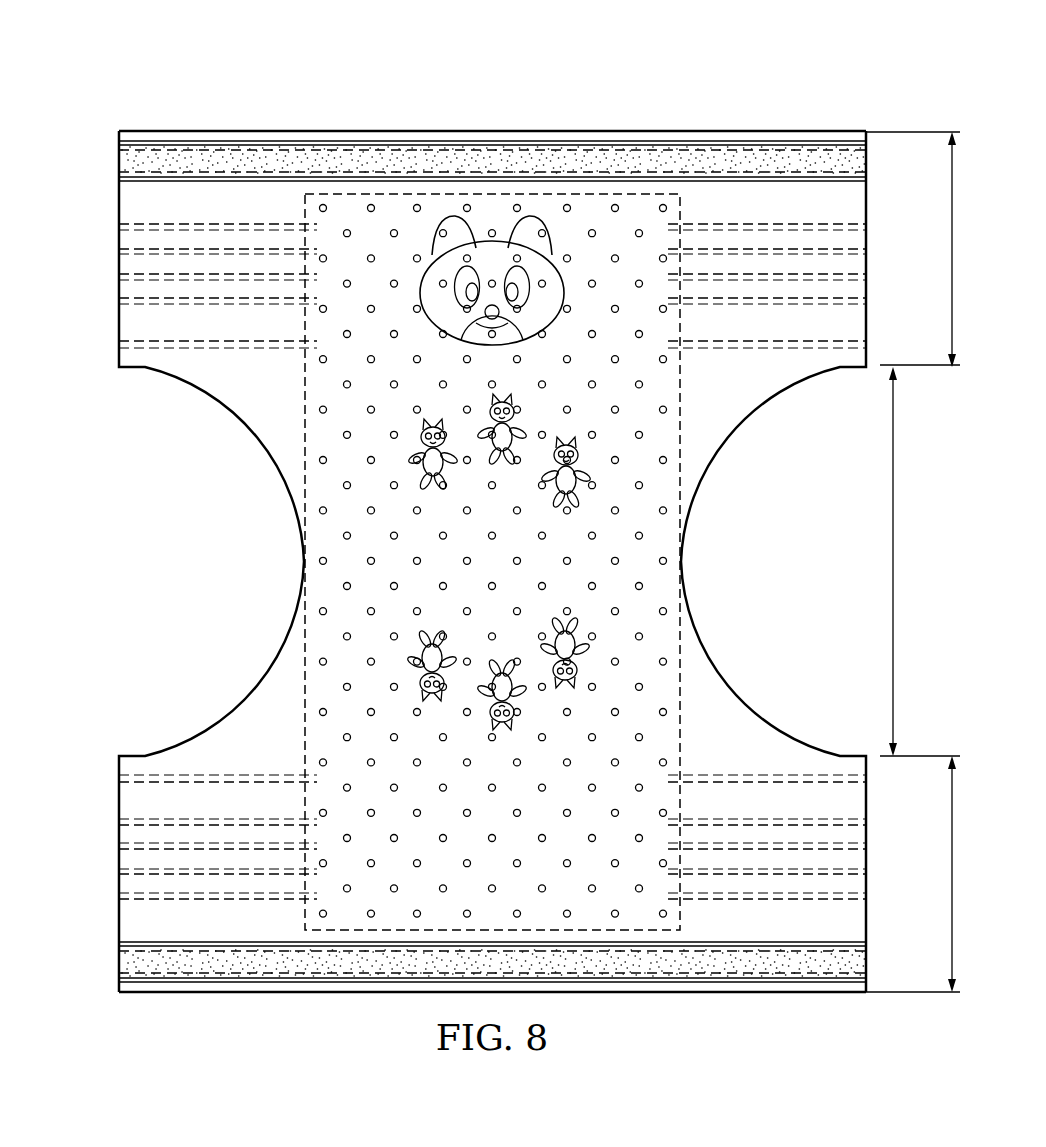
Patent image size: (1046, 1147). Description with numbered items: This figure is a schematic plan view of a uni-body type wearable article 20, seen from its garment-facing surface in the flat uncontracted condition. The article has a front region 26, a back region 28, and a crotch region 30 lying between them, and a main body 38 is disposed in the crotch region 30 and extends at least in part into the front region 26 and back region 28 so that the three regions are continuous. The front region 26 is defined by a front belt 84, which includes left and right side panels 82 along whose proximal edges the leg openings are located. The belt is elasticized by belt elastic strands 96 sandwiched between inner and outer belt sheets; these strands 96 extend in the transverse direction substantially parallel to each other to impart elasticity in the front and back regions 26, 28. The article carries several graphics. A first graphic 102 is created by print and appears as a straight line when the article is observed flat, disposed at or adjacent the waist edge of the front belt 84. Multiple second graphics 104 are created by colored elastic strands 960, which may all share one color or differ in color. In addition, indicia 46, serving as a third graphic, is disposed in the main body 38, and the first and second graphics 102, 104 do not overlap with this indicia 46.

The wearable article 20 is at (311, 94).
The front belt 84 is at (492, 564).
The first graphic 102 is at (528, 564).
The front region 26 is at (952, 205).
The second graphic 104 is at (802, 563).
The belt elastic strands 96 is at (803, 564).
The side panel 82 is at (797, 561).
The crotch region 30 is at (893, 561).
The back region 28 is at (952, 917).
The main body 38 is at (292, 462).
The indicia 46 is at (565, 296).
The colored elastic strands 960 is at (181, 562).